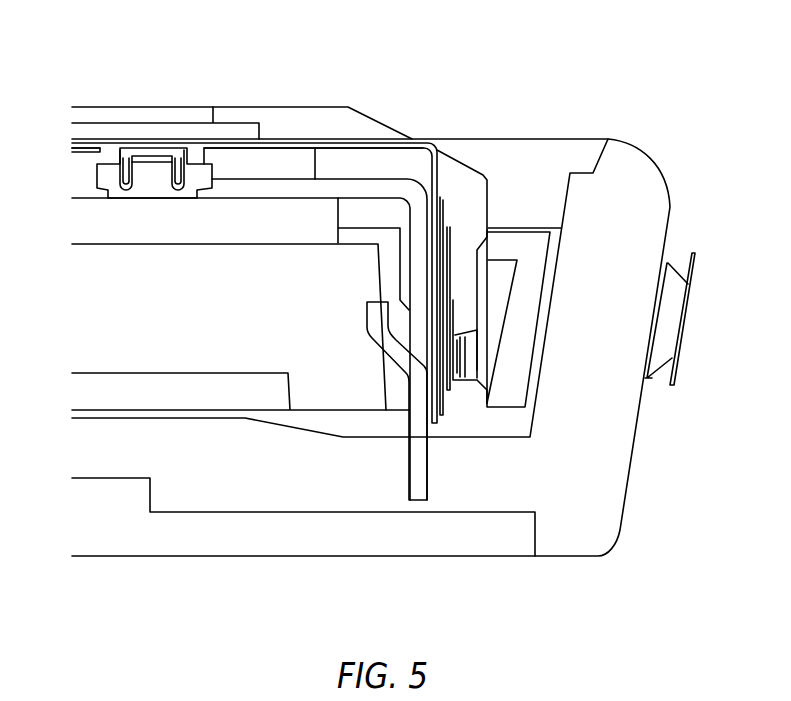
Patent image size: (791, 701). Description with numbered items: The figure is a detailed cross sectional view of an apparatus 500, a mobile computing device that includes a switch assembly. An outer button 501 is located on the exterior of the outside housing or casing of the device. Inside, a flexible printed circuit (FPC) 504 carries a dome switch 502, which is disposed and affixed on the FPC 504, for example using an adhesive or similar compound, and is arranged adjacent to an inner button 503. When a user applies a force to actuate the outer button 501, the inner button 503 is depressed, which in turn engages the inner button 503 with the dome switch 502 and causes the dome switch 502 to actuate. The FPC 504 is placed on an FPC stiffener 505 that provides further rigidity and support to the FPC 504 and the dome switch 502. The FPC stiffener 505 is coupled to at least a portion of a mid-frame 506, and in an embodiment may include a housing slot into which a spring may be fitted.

The apparatus 500 is at (638, 127).
The outer button 501 is at (687, 318).
The dome switch 502 is at (463, 273).
The inner button 503 is at (480, 362).
The flexible printed circuit (FPC) 504 is at (441, 139).
The FPC stiffener 505 is at (418, 338).
The mid-frame 506 is at (145, 303).